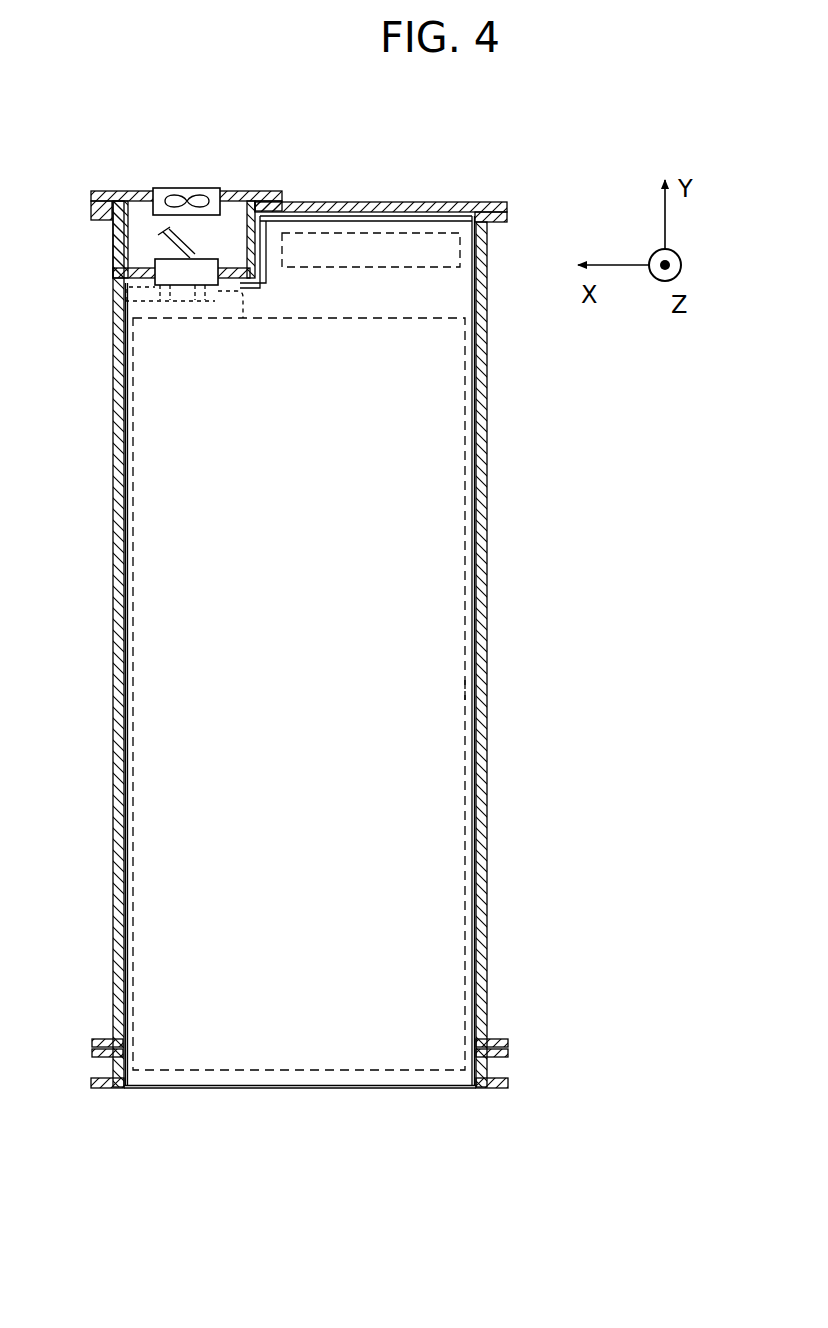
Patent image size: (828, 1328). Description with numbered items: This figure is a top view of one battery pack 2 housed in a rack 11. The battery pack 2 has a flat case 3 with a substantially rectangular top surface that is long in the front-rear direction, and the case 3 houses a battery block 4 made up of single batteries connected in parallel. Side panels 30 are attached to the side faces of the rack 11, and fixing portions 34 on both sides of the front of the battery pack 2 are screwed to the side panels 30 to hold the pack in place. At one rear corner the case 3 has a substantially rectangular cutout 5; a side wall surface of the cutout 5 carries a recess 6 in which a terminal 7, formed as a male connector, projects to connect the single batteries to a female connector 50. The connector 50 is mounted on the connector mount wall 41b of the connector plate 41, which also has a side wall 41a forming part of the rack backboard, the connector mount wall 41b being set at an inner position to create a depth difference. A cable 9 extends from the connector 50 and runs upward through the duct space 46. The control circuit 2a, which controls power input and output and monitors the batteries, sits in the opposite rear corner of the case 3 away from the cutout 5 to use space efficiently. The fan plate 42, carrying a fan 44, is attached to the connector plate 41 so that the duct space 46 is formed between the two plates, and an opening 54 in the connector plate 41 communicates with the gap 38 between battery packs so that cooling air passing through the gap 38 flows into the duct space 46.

The battery pack 2 is at (327, 1090).
The control circuit 2a is at (433, 268).
The case 3 is at (403, 585).
The battery block 4 is at (468, 693).
The cutout 5 is at (120, 263).
The recess 6 is at (125, 300).
The terminal 7 is at (215, 290).
The cable 9 is at (172, 240).
The rack 11 is at (486, 852).
The side panel 30 is at (490, 463).
The fixing portion 34 is at (103, 1088).
The gap 38 is at (336, 442).
The connector plate 41 is at (468, 202).
The side wall 41a is at (410, 202).
The connector mount wall 41b is at (250, 290).
The fan plate 42 is at (272, 190).
The fan 44 is at (190, 188).
The duct space 46 is at (236, 214).
The connector 50 is at (138, 282).
The opening 54 is at (248, 276).